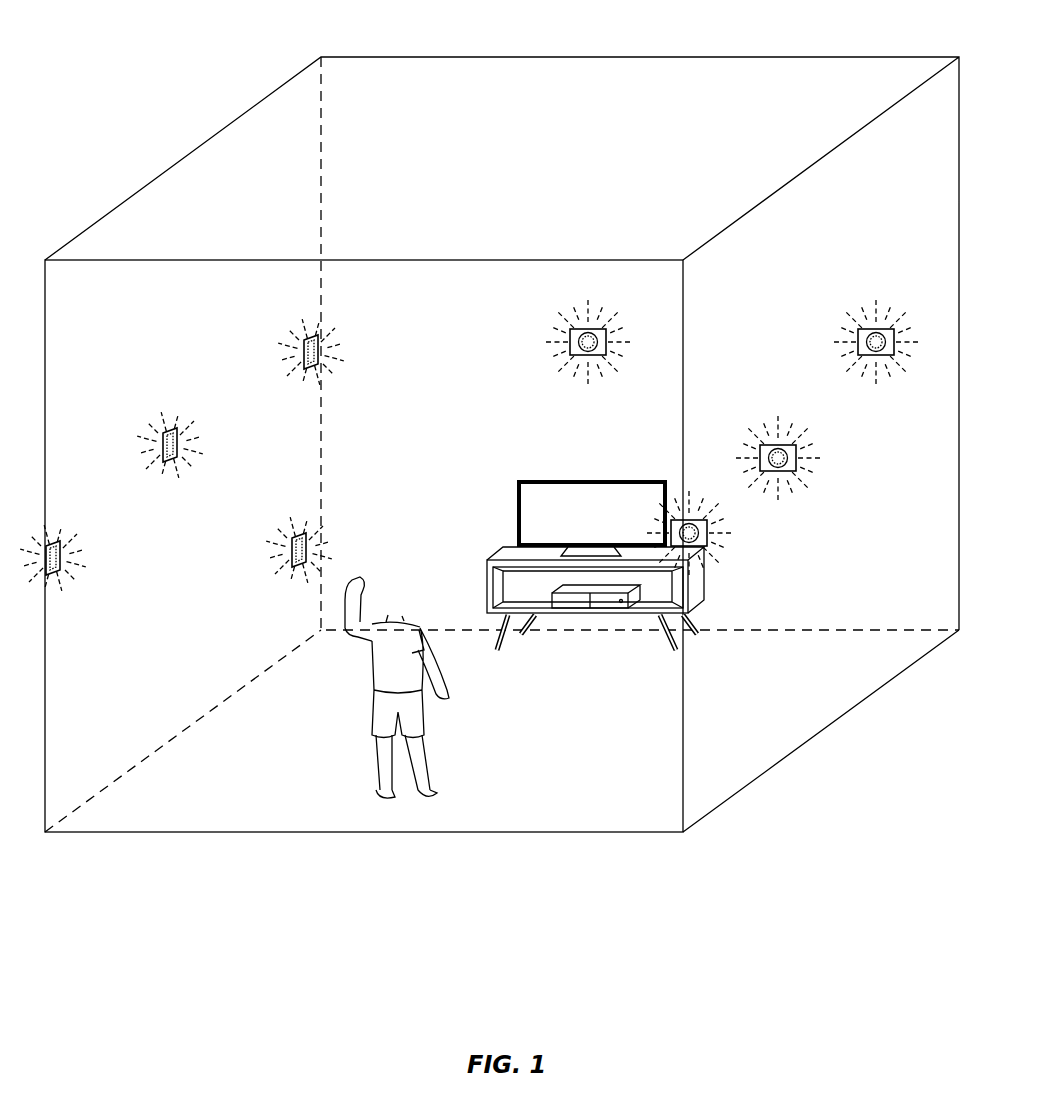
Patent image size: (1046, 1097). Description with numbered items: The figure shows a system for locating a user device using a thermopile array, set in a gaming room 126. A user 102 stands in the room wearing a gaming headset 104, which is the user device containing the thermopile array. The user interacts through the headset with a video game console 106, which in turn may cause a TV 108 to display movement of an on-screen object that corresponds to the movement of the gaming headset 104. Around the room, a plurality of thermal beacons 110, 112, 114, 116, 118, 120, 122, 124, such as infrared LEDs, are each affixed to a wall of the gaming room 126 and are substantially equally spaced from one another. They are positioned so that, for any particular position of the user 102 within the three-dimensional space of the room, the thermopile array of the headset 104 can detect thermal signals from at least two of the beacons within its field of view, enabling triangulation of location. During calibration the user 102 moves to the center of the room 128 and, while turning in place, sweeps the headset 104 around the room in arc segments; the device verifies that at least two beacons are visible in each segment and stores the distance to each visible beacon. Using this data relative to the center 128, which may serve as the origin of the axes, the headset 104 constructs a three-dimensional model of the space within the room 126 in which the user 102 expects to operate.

The user 102 is at (362, 710).
The gaming headset 104 is at (412, 603).
The video game console 106 is at (600, 607).
The TV 108 is at (527, 480).
The thermal beacon 110 is at (76, 548).
The thermal beacon 112 is at (198, 440).
The thermal beacon 114 is at (338, 352).
The thermal beacon 116 is at (556, 349).
The thermal beacon 118 is at (852, 327).
The thermal beacon 120 is at (756, 443).
The thermal beacon 122 is at (716, 526).
The thermal beacon 124 is at (275, 560).
The gaming room 126 is at (236, 119).
The center of the room 128 is at (531, 705).